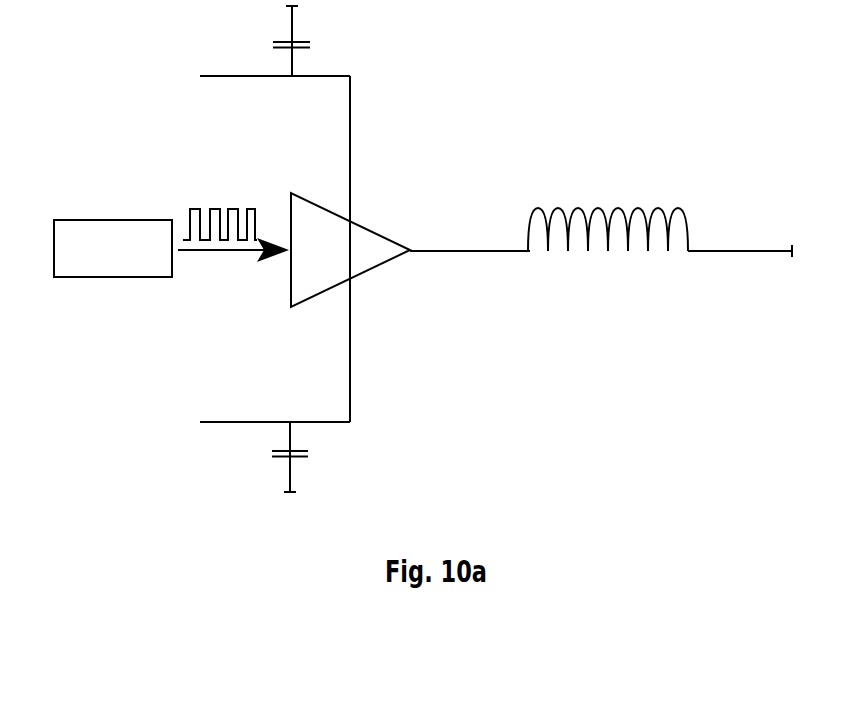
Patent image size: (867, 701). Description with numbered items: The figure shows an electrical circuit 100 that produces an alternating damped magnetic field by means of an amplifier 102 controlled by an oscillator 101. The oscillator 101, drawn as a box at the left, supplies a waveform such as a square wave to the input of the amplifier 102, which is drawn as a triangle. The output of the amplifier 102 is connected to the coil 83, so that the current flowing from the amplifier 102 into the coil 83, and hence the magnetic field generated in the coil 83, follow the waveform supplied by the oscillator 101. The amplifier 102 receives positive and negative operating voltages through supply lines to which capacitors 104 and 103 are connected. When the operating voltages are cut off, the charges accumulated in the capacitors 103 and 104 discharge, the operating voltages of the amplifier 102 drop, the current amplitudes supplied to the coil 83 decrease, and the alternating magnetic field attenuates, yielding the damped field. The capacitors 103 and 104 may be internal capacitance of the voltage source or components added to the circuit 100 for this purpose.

The electrical circuit 100 is at (100, 20).
The oscillator 101 is at (110, 199).
The amplifier 102 is at (350, 250).
The capacitor 103 is at (308, 453).
The capacitor 104 is at (312, 45).
The coil 83 is at (608, 209).